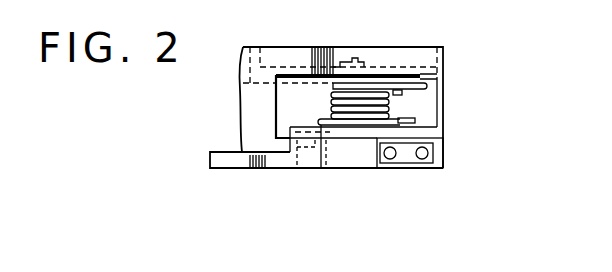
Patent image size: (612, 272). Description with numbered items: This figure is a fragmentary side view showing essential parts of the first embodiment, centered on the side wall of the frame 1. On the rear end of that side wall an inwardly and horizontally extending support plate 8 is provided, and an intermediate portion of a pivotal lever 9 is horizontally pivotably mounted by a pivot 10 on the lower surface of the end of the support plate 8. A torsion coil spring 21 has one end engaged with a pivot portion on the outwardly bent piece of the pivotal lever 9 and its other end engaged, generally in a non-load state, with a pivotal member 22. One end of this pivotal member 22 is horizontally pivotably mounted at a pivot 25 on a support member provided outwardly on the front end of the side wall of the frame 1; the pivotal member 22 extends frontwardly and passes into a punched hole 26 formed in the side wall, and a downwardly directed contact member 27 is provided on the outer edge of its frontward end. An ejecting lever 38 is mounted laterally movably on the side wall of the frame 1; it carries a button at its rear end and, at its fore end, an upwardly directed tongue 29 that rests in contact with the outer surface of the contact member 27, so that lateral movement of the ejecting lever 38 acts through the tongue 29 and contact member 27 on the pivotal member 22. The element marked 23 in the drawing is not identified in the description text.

The frame 1 is at (252, 108).
The pivotal lever 9 is at (248, 47).
The pivot 10 is at (353, 48).
The support plate 8 is at (408, 72).
The torsion coil spring 21 is at (378, 98).
The punched hole 26 is at (413, 100).
The pivot 25 is at (405, 122).
The pivotal member 22 is at (357, 128).
The connector block 23 is at (409, 158).
The ejecting lever 38 is at (230, 160).
The contact member 27 is at (297, 168).
The tongue 29 is at (321, 168).